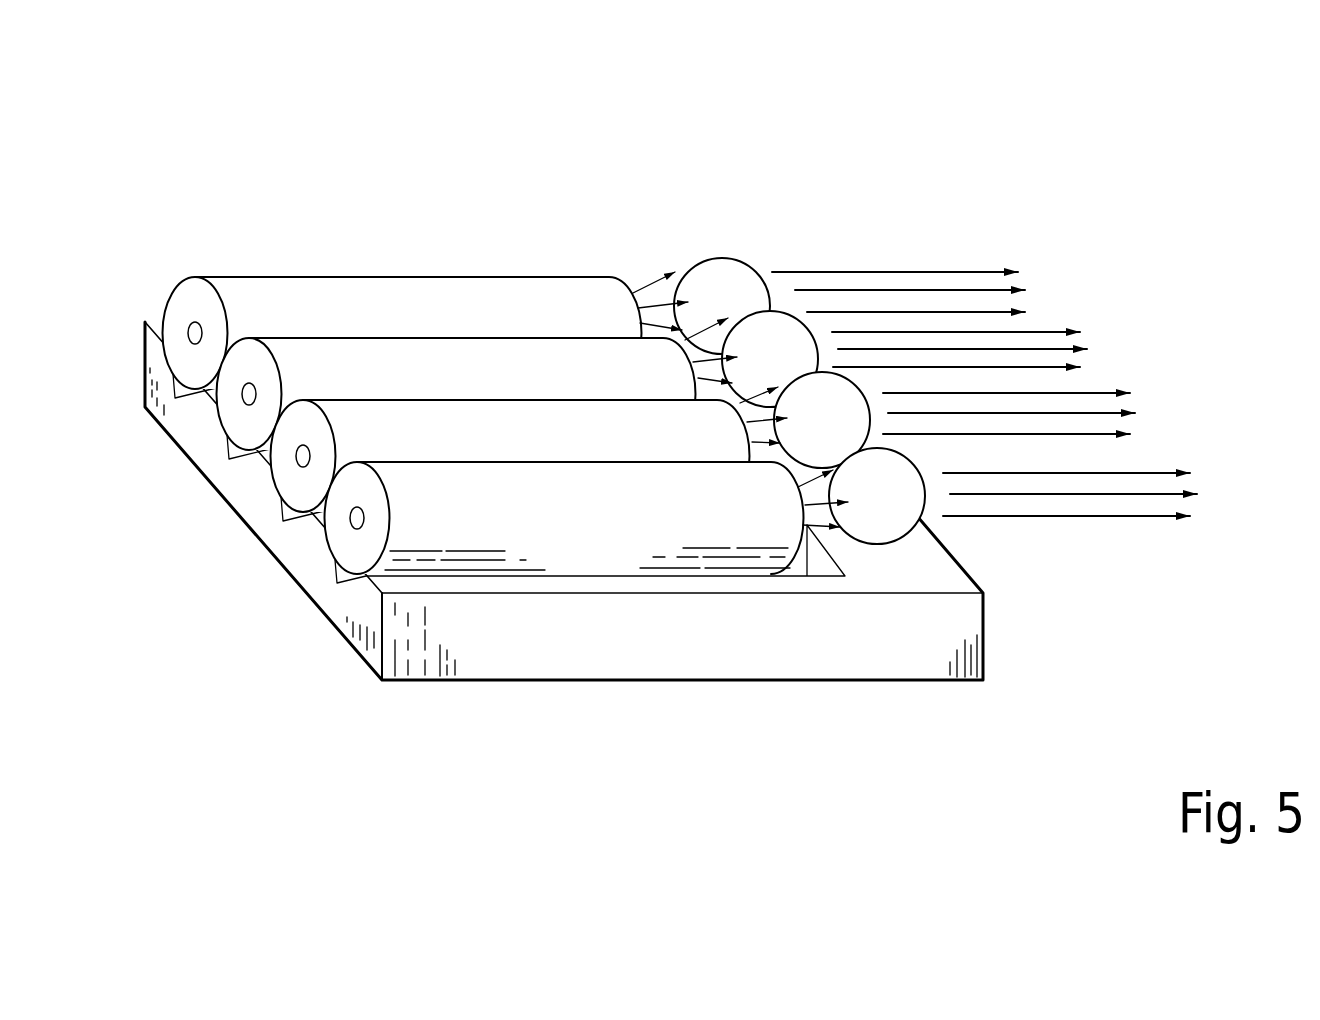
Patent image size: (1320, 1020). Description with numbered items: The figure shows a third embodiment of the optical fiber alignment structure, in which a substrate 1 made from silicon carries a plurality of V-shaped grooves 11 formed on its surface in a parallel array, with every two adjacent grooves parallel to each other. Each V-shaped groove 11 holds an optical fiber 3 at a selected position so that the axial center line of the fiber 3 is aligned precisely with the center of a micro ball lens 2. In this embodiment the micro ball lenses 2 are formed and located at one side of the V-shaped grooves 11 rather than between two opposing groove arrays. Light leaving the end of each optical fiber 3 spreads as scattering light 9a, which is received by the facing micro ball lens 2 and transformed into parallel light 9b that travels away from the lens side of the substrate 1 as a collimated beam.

The substrate 1 is at (750, 663).
The micro ball lens 2 is at (730, 292).
The optical fiber 3 is at (407, 298).
The scattering light 9a is at (633, 263).
The parallel light 9b is at (972, 248).
The V-shaped groove 11 is at (332, 575).